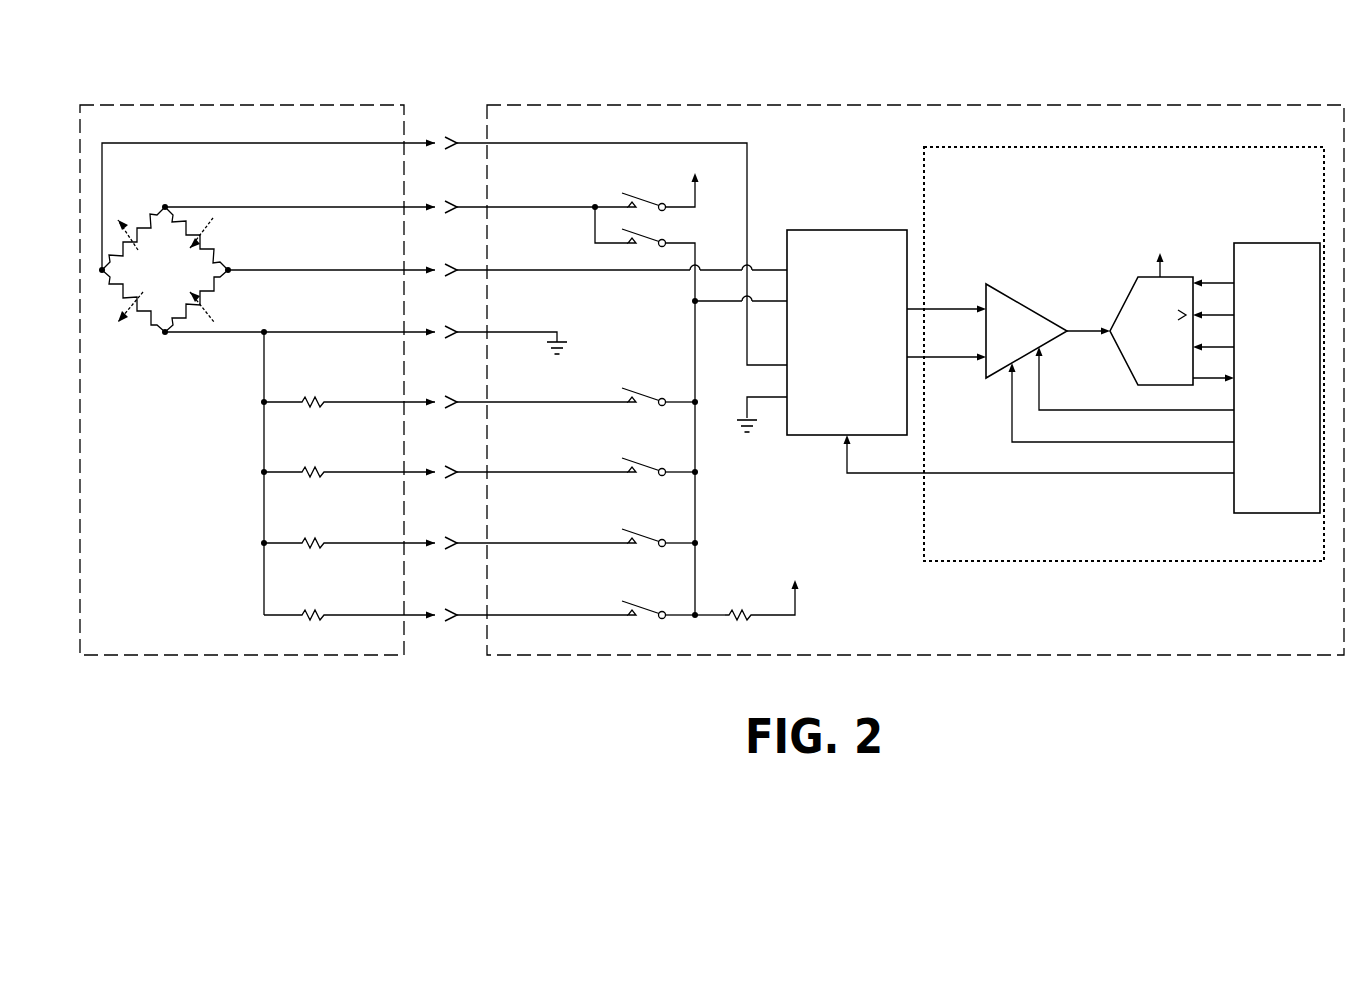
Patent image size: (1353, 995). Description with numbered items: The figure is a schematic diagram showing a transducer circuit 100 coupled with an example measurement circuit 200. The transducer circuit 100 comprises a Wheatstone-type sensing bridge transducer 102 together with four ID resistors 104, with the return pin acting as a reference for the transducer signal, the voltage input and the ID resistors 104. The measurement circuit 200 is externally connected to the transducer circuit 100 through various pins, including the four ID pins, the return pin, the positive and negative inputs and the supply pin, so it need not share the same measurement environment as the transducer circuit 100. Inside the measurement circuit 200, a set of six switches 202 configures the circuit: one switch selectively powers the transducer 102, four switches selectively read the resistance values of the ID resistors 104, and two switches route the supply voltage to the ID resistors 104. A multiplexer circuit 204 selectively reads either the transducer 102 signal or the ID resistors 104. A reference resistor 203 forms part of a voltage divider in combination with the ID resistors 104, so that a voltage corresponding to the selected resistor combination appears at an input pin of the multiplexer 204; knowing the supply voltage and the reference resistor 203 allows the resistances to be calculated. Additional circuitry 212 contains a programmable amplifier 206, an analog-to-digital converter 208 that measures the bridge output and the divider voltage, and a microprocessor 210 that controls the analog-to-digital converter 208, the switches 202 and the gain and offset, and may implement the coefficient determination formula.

The transducer circuit 100 is at (241, 80).
The transducer 102 is at (165, 269).
The ID resistors 104 is at (255, 385).
The measurement circuit 200 is at (812, 80).
The switches 202 is at (585, 622).
The reference resistor RREF 203 is at (739, 576).
The multiplexer circuit 204 is at (985, 351).
The programmable amplifier 206 is at (1025, 310).
The analog-to-digital converter 208 is at (1136, 298).
The microprocessor 210 is at (1277, 378).
The additional circuitry 212 is at (924, 204).